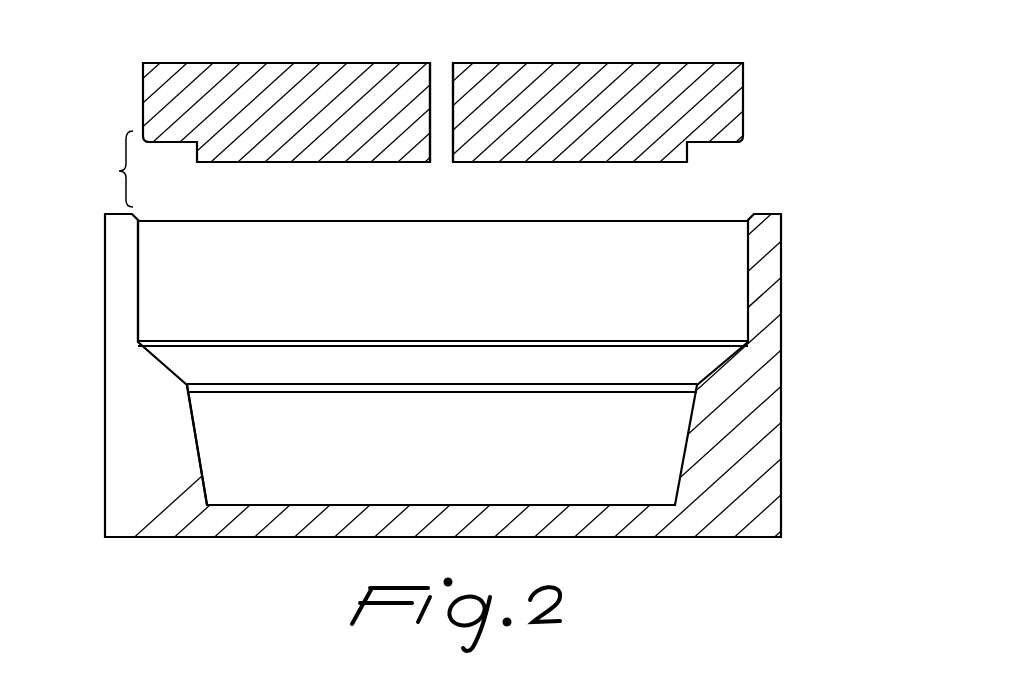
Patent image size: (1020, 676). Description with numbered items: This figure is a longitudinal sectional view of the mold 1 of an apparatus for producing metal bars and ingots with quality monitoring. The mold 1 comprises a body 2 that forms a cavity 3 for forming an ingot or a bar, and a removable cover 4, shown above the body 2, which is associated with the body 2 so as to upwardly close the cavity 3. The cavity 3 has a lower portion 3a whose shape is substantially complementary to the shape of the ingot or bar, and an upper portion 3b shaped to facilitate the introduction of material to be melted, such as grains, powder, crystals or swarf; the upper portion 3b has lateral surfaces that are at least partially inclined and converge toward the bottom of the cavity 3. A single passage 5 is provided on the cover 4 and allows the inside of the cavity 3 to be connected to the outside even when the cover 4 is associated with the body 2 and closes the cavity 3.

The mold 1 is at (511, 300).
The body 2 is at (521, 355).
The cavity 3 is at (405, 323).
The lower portion 3a is at (203, 477).
The upper portion 3b is at (140, 307).
The removable cover 4 is at (431, 95).
The passage 5 is at (438, 103).